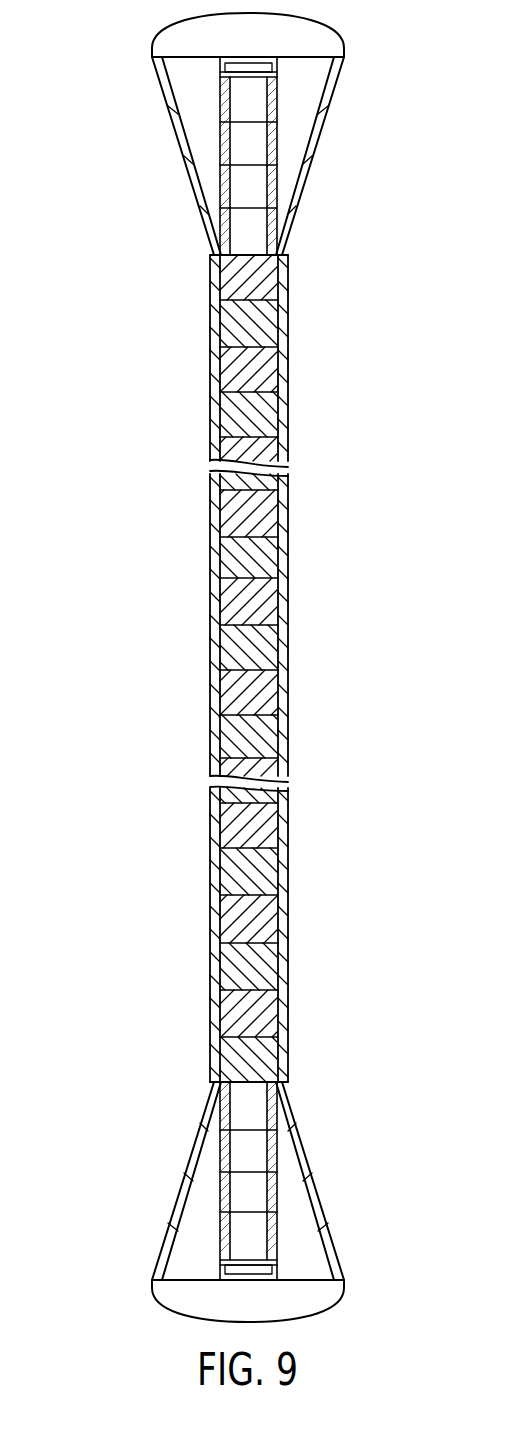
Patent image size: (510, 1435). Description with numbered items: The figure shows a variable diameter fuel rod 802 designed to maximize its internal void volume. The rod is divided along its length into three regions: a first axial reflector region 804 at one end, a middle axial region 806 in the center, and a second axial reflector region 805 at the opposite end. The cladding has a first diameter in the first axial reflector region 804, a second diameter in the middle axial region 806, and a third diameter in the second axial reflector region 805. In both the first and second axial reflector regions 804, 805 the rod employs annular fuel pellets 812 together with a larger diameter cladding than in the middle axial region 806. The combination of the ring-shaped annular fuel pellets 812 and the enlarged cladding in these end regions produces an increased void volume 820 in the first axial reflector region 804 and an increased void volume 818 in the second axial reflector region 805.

The variable diameter fuel rod 802 is at (92, 261).
The first axial reflector region 804 is at (266, 134).
The second axial reflector region 805 is at (264, 1202).
The middle axial region 806 is at (192, 255).
The annular fuel pellets 812 is at (222, 227).
The void volume 818 is at (190, 1222).
The void volume 820 is at (185, 92).